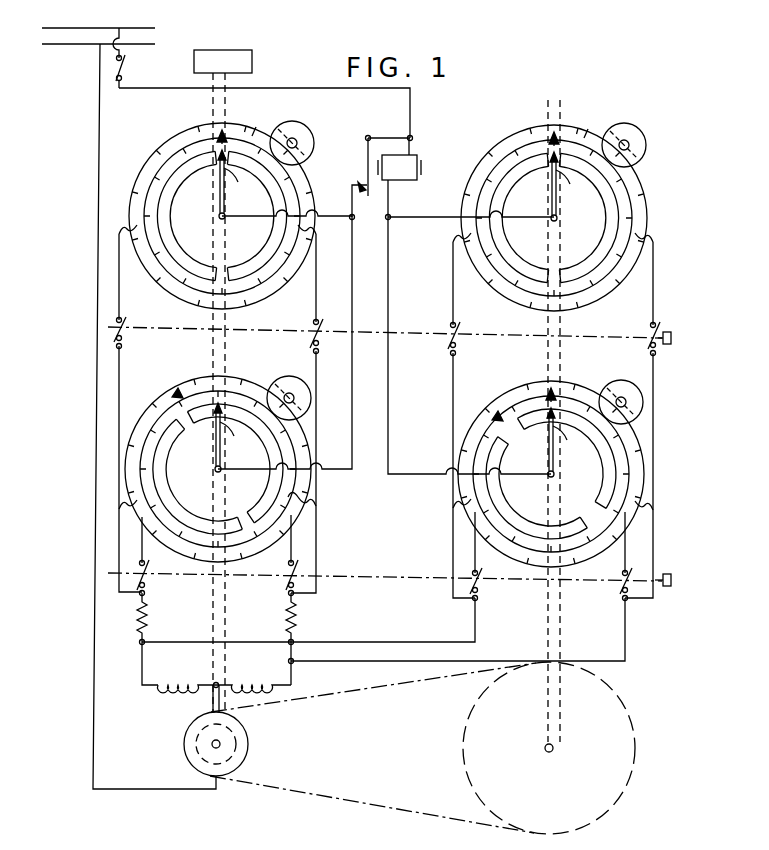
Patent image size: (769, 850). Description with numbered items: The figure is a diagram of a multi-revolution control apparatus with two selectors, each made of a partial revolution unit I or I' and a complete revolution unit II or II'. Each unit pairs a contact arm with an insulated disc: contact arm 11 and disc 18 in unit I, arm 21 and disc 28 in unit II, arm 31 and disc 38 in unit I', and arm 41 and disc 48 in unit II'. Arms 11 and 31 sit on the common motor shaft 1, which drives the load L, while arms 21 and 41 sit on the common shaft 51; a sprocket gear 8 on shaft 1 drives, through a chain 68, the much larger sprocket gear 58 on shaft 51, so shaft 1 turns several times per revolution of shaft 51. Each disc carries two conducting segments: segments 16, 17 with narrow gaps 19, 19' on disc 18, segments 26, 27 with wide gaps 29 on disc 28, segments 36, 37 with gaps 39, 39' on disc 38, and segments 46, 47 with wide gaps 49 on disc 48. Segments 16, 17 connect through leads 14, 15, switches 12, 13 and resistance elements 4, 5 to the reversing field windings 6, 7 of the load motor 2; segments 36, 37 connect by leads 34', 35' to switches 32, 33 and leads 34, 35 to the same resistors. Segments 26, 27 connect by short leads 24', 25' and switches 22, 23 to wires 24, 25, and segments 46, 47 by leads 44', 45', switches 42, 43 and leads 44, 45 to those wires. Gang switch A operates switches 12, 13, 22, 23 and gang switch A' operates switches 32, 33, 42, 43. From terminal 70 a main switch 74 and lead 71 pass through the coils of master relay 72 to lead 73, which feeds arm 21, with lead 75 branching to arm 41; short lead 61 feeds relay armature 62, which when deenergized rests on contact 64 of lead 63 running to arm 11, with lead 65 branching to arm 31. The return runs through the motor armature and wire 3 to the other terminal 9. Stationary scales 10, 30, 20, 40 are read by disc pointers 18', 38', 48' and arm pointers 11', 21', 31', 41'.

The common shaft 1 is at (212, 348).
The load motor 2 is at (248, 740).
The wire 3 is at (98, 364).
The resistance element 4 is at (136, 612).
The resistance element 5 is at (298, 608).
The reversing field winding 6 is at (172, 682).
The reversing field winding 7 is at (246, 682).
The sprocket gear 8 is at (236, 758).
The terminal 9 is at (100, 44).
The stationary circular scale 10 is at (238, 382).
The contact arm 11 is at (227, 437).
The pointer 11' is at (238, 521).
The switch 12 is at (144, 588).
The switch 13 is at (286, 586).
The lead 14 is at (142, 548).
The lead 15 is at (292, 550).
The conducting segment 16 is at (160, 454).
The conducting segment 17 is at (270, 456).
The insulated disc 18 is at (244, 469).
The pointer 18' is at (180, 372).
The gap 19 is at (192, 429).
The gap 19' is at (248, 504).
The stationary circular scale 20 is at (580, 390).
The contact arm 21 is at (571, 443).
The pointer 21' is at (573, 421).
The switch 22 is at (480, 592).
The switch 23 is at (618, 592).
The wire 24 is at (308, 620).
The short lead 24' is at (444, 549).
The wire 25 is at (458, 629).
The short lead 25' is at (661, 549).
The conducting segment 26 is at (498, 488).
The conducting segment 27 is at (604, 498).
The insulated disc 28 is at (624, 470).
The gap 29 is at (512, 432).
The stationary circular scale 30 is at (178, 137).
The contact arm 31 is at (237, 184).
The pointer 31' is at (203, 115).
The switch 32 is at (124, 340).
The switch 33 is at (312, 346).
The lead 34 is at (101, 469).
The lead 34' is at (141, 277).
The lead 35 is at (322, 472).
The lead 35' is at (298, 278).
The conducting segment 36 is at (168, 198).
The conducting segment 37 is at (266, 250).
The insulated disc 38 is at (239, 216).
The pointer 38' is at (252, 112).
The gap 39 is at (176, 146).
The gap 39' is at (206, 258).
The stationary circular scale 40 is at (520, 130).
The contact arm 41 is at (571, 186).
The pointer 41' is at (601, 116).
The switch 42 is at (462, 330).
The switch 43 is at (656, 322).
The lead 44 is at (445, 426).
The lead 44' is at (433, 283).
The lead 45 is at (673, 426).
The lead 45' is at (675, 283).
The conducting segment 46 is at (498, 204).
The conducting segment 47 is at (596, 246).
The insulated disc 48 is at (581, 218).
The pointer 48' is at (587, 113).
The gap 49 is at (548, 150).
The common shaft 51 is at (550, 388).
The sprocket gear 58 is at (630, 716).
The short lead 61 is at (398, 136).
The armature 62 is at (366, 140).
The lead 63 is at (355, 214).
The contact 64 is at (362, 186).
The lead 65 is at (351, 200).
The chain 68 is at (380, 690).
The terminal 70 is at (118, 34).
The lead 71 is at (318, 88).
The master relay 72 is at (417, 164).
The lead 73 is at (390, 300).
The switch 74 is at (126, 70).
The lead 75 is at (424, 217).
The load L is at (240, 58).
The gang switch A is at (401, 581).
The gang switch A' is at (408, 339).
The partial revolution unit I is at (133, 387).
The partial revolution unit I' is at (126, 107).
The complete revolution unit II is at (468, 387).
The complete revolution unit II' is at (471, 107).